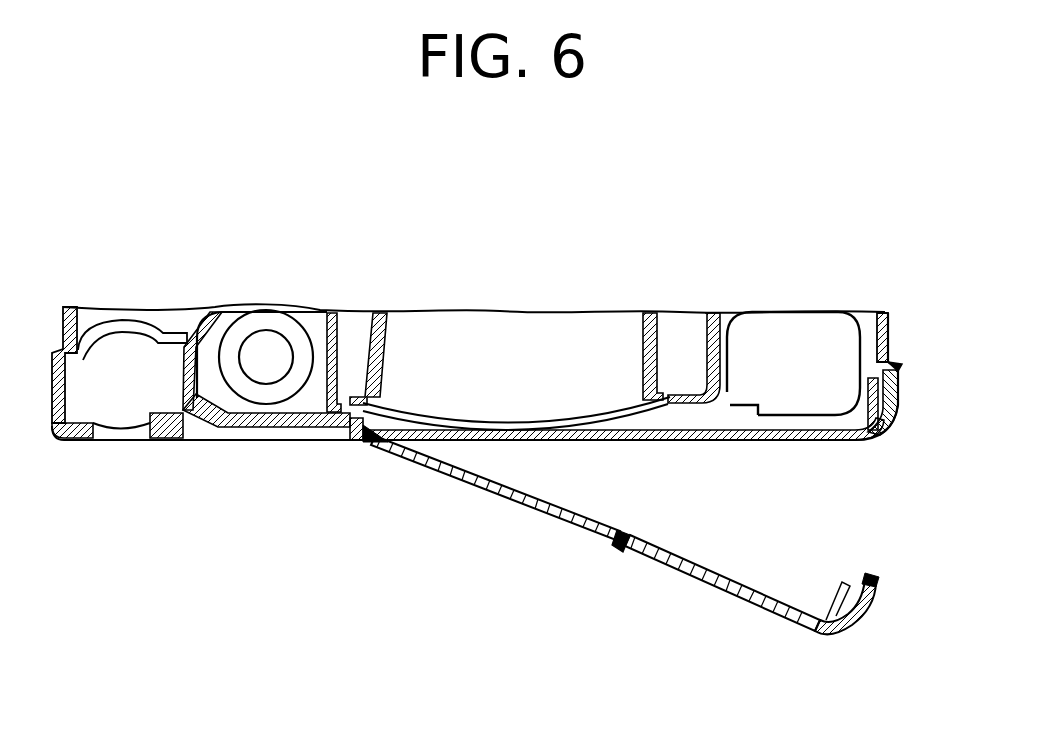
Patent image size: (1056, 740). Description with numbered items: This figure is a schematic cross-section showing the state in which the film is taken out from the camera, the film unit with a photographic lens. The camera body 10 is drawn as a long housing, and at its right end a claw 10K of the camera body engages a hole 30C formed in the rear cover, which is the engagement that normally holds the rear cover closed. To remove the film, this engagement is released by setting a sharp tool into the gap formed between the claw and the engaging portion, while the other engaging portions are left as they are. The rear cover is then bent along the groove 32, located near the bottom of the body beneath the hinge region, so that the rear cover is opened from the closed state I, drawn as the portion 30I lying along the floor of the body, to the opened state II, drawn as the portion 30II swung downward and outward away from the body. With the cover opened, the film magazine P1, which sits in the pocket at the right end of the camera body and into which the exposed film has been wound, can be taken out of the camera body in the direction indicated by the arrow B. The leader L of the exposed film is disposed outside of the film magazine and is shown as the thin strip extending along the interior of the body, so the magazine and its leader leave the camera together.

The camera body 10 is at (603, 293).
The film magazine P1 is at (803, 330).
The claw 10K is at (899, 378).
The hole 30C is at (898, 388).
The rear cover in state I 30I is at (892, 433).
The rear cover in state II 30II is at (838, 642).
The groove 32 is at (373, 440).
The leader L is at (678, 443).
The arrow B is at (793, 440).